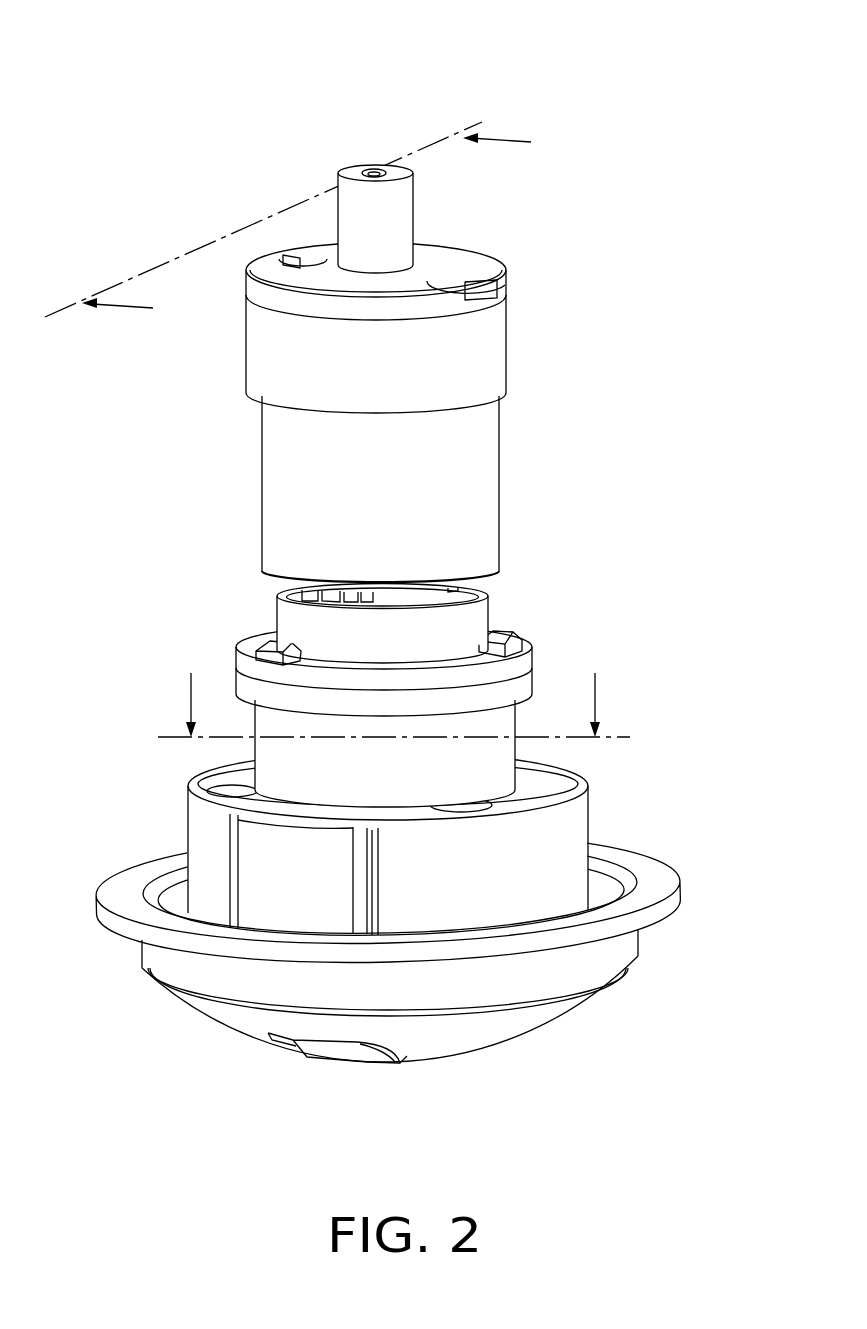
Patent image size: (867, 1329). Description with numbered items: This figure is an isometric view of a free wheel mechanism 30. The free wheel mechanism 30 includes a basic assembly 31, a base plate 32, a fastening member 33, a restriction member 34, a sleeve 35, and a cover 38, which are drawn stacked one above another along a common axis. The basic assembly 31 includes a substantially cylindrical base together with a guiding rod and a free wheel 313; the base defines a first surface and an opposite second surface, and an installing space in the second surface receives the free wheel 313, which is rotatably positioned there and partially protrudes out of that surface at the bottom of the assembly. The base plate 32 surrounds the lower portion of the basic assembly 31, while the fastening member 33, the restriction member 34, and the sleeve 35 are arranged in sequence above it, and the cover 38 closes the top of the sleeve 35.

The free wheel mechanism 30 is at (392, 47).
The basic assembly 31 is at (567, 837).
The base plate 32 is at (175, 975).
The free wheel 313 is at (343, 1052).
The fastening member 33 is at (307, 788).
The restriction member 34 is at (470, 622).
The sleeve 35 is at (478, 455).
The cover 38 is at (457, 258).